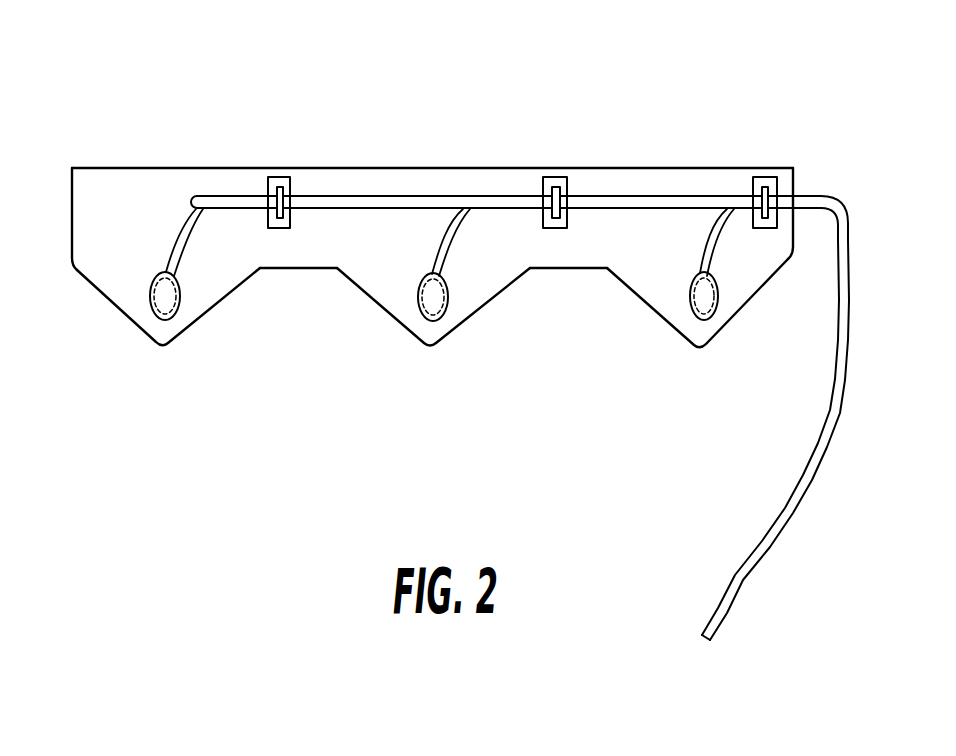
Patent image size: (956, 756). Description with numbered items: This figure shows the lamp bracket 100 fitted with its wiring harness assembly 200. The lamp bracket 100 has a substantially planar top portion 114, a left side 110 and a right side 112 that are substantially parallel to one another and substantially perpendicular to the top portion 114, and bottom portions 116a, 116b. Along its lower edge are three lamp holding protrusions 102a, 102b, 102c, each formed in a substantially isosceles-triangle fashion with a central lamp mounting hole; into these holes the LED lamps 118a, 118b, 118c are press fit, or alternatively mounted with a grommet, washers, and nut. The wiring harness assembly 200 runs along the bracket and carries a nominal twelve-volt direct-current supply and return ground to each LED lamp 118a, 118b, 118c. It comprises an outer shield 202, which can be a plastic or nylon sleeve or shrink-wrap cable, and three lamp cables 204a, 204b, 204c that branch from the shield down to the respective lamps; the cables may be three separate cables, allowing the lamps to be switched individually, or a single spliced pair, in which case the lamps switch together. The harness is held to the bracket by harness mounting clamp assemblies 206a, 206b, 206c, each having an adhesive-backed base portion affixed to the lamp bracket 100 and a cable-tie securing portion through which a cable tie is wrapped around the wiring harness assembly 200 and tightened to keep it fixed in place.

The lamp bracket 100 is at (623, 55).
The left side 110 is at (72, 209).
The right side 112 is at (795, 255).
The top portion 114 is at (142, 168).
The bottom portion 116a is at (300, 268).
The bottom portion 116b is at (560, 268).
The lamp holding protrusion 102a is at (100, 298).
The lamp holding protrusion 102b is at (460, 333).
The lamp holding protrusion 102c is at (727, 340).
The LED lamp 118a is at (163, 322).
The LED lamp 118b is at (429, 322).
The LED lamp 118c is at (697, 320).
The wiring harness assembly 200 is at (752, 553).
The outer shield 202 is at (228, 195).
The lamp cable 204a is at (173, 219).
The lamp cable 204b is at (440, 240).
The lamp cable 204c is at (707, 240).
The harness mounting clamp assembly 206a is at (290, 177).
The harness mounting clamp assembly 206b is at (560, 178).
The harness mounting clamp assembly 206c is at (767, 177).